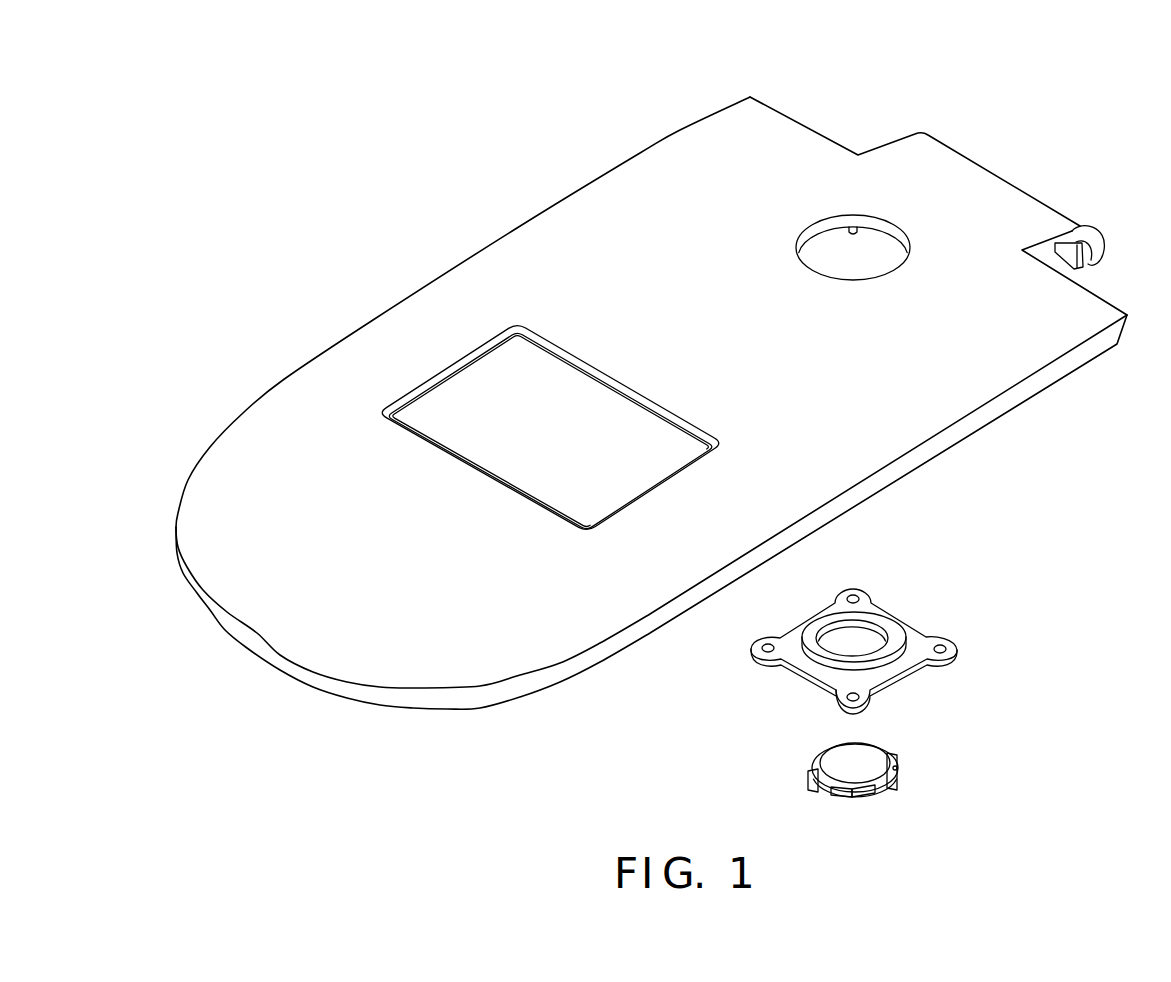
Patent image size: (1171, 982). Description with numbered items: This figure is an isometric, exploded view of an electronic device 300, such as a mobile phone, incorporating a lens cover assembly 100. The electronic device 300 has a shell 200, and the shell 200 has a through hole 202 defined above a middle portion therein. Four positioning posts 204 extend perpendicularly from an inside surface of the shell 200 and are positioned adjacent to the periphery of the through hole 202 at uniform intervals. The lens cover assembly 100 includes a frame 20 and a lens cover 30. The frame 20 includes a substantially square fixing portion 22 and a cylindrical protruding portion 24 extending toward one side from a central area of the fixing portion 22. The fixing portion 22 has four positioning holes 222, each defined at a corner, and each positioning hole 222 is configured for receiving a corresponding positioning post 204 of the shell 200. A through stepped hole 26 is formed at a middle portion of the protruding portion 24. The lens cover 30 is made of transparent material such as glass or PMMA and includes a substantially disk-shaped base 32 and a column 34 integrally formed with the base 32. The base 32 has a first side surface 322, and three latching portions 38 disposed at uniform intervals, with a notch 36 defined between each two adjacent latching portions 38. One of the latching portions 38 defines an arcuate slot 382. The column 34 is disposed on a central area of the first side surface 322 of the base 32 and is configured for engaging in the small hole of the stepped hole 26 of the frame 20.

The electronic device 300 is at (745, 69).
The shell 200 is at (1036, 180).
The through hole 202 is at (833, 255).
The positioning posts 204 is at (855, 226).
The lens cover assembly 100 is at (1017, 602).
The frame 20 is at (927, 623).
The fixing portion 22 is at (790, 653).
The positioning holes 222 is at (853, 597).
The protruding portion 24 is at (813, 625).
The stepped hole 26 is at (852, 641).
The lens cover 30 is at (903, 758).
The base 32 is at (817, 788).
The column 34 is at (837, 762).
The notch 36 is at (860, 793).
The latching portions 38 is at (842, 798).
The first side surface 322 is at (888, 788).
The arcuate slot 382 is at (897, 768).